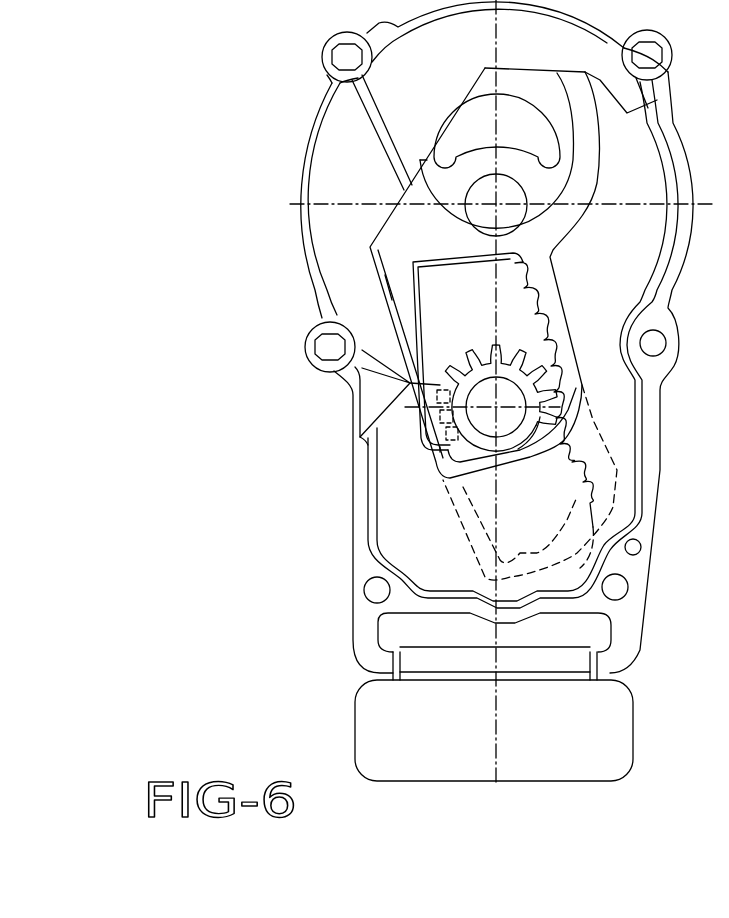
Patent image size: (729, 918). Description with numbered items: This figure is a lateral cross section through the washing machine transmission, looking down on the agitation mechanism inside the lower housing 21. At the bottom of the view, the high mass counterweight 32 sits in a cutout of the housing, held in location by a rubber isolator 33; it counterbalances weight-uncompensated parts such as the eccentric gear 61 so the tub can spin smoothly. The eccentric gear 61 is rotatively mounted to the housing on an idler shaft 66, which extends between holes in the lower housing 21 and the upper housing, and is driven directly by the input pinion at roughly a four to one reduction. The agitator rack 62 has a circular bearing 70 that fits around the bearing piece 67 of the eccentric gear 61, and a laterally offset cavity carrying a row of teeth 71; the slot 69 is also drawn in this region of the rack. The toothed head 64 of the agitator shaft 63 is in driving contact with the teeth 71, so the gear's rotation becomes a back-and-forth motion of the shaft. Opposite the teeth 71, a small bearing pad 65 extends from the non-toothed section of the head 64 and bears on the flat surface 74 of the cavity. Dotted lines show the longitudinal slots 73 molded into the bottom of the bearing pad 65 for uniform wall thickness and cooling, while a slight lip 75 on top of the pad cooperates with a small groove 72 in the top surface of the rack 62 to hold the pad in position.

The lower housing 21 is at (648, 432).
The high mass counterweight 32 is at (572, 737).
The rubber isolator 33 is at (595, 640).
The eccentric gear 61 is at (645, 238).
The agitator rack 62 is at (548, 260).
The agitator shaft 63 is at (510, 425).
The toothed head 64 is at (462, 355).
The bearing pad 65 is at (450, 442).
The idler shaft 66 is at (500, 196).
The bearing piece 67 is at (462, 198).
The slot 69 is at (540, 139).
The circular bearing 70 is at (580, 157).
The teeth 71 is at (527, 310).
The groove 72 is at (417, 283).
The longitudinal slots 73 is at (440, 412).
The flat surface 74 is at (420, 317).
The lip 75 is at (440, 384).